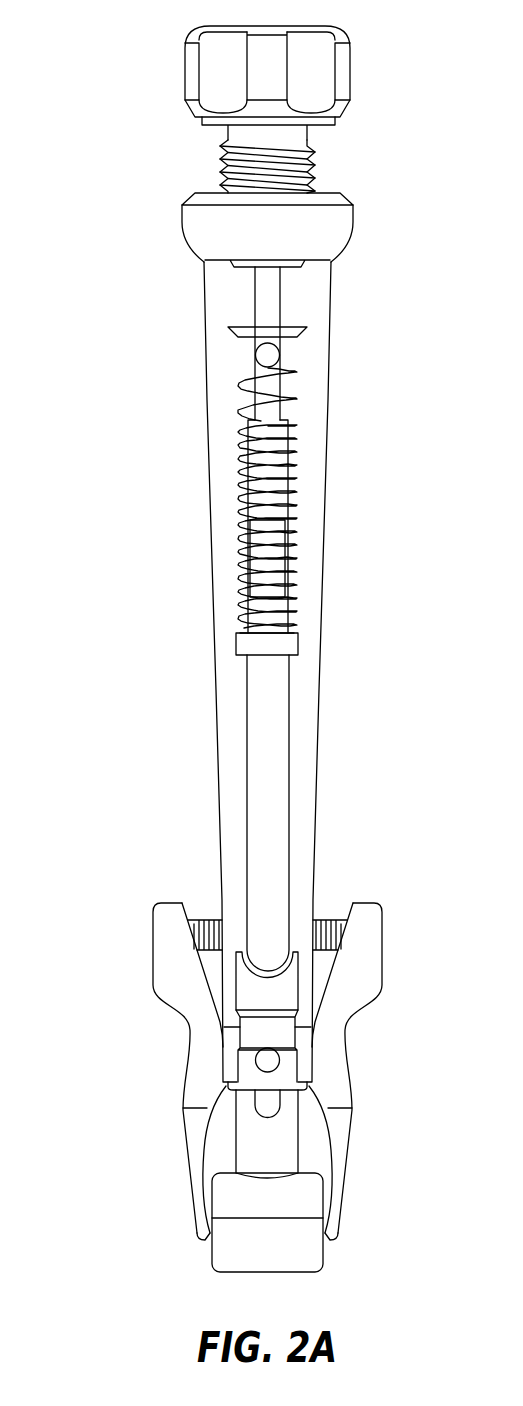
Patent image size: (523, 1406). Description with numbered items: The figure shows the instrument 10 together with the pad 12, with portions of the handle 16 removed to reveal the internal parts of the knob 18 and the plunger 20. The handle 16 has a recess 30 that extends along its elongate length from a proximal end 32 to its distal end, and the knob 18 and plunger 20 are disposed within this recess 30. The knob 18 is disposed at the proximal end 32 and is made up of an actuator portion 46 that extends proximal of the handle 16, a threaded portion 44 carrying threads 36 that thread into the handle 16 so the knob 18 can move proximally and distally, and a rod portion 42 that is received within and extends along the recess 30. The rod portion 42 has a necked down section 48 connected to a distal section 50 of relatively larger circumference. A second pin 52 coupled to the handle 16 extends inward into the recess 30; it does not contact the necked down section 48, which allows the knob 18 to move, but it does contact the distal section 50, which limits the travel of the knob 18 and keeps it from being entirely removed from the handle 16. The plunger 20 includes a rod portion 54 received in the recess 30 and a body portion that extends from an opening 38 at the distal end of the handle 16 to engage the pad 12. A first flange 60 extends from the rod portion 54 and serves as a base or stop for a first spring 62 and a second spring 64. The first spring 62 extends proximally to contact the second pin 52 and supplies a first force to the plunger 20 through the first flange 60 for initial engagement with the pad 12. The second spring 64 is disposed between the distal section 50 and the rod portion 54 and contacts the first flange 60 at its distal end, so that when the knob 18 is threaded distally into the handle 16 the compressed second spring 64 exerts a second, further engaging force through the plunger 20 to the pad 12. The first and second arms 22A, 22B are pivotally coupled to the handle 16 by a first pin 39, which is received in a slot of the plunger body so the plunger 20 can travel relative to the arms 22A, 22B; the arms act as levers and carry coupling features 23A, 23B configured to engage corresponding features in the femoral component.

The instrument 10 is at (103, 200).
The pad 12 is at (215, 1275).
The handle 16 is at (326, 488).
The knob 18 is at (360, 33).
The plunger 20 is at (281, 1151).
The first arm 22A is at (188, 1172).
The second arm 22B is at (347, 1172).
The coupling feature 23A is at (207, 1242).
The coupling feature 23B is at (328, 1242).
The recess 30 is at (272, 710).
The proximal end 32 is at (321, 193).
The threads 36 is at (220, 162).
The opening 38 is at (238, 1095).
The first pin 39 is at (268, 1060).
The rod portion 42 is at (250, 302).
The threaded portion 44 is at (317, 150).
The actuator portion 46 is at (185, 72).
The necked down section 48 is at (268, 393).
The distal section 50 is at (277, 443).
The second pin 52 is at (270, 353).
The rod portion 54 is at (267, 802).
The first flange 60 is at (250, 643).
The first spring 62 is at (268, 460).
The second spring 64 is at (267, 623).